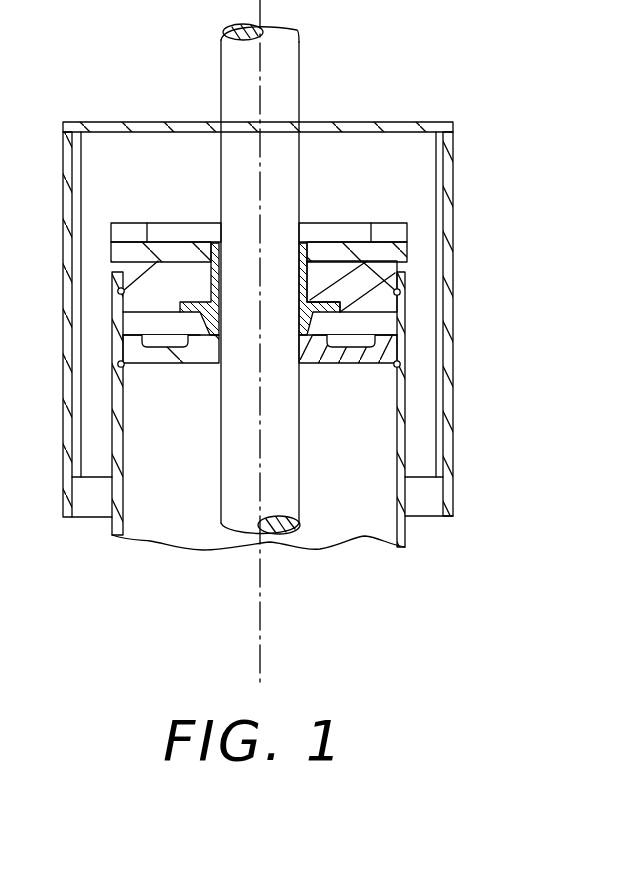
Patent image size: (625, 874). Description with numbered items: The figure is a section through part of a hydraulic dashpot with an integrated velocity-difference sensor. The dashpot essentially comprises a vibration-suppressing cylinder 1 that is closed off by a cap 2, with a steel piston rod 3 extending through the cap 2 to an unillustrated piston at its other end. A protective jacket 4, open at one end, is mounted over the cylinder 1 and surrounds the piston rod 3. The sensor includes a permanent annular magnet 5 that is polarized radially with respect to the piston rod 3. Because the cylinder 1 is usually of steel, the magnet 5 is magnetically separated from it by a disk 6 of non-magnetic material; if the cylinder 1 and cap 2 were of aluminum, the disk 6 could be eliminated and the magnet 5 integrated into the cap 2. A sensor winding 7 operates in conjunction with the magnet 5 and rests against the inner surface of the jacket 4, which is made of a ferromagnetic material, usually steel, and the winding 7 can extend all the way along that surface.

The vibration-suppressing cylinder 1 is at (407, 393).
The cap 2 is at (385, 307).
The piston rod 3 is at (301, 490).
The protective jacket 4 is at (445, 150).
The permanent annular magnet 5 is at (443, 200).
The disk 6 is at (407, 254).
The sensor winding 7 is at (447, 460).